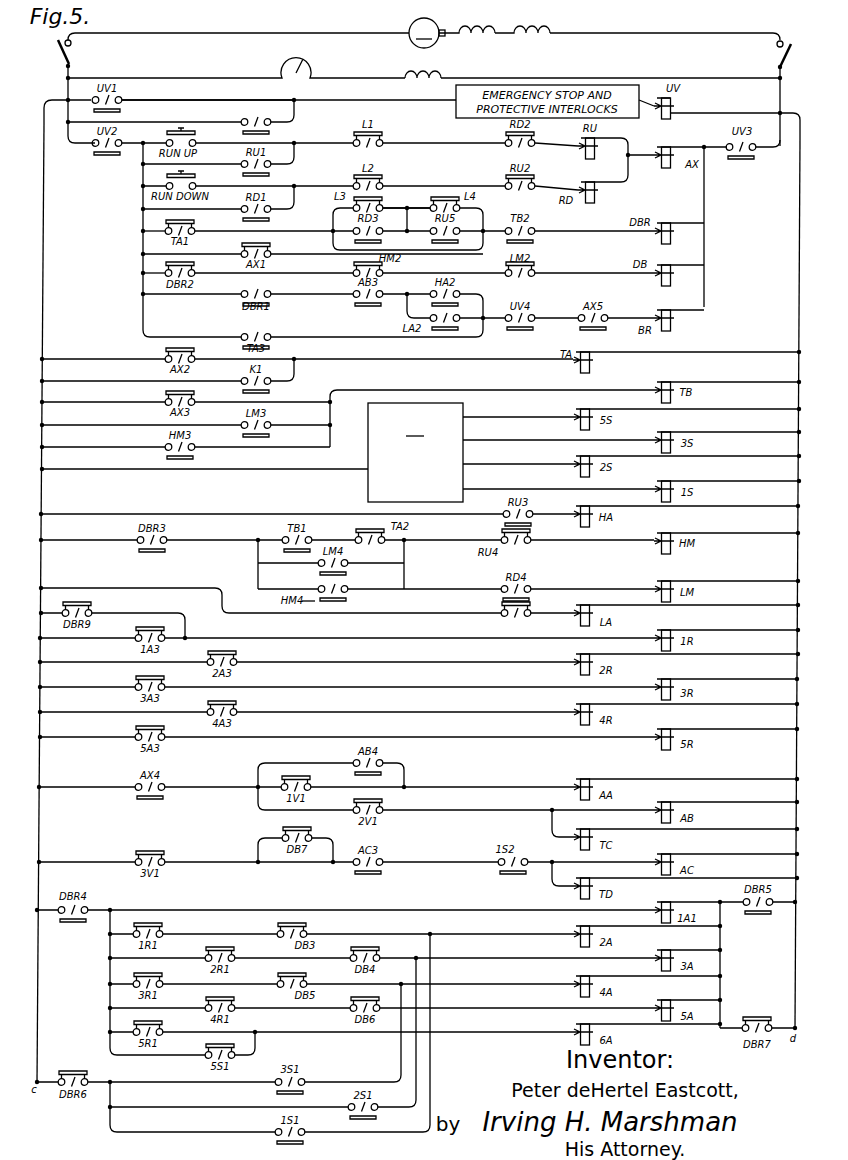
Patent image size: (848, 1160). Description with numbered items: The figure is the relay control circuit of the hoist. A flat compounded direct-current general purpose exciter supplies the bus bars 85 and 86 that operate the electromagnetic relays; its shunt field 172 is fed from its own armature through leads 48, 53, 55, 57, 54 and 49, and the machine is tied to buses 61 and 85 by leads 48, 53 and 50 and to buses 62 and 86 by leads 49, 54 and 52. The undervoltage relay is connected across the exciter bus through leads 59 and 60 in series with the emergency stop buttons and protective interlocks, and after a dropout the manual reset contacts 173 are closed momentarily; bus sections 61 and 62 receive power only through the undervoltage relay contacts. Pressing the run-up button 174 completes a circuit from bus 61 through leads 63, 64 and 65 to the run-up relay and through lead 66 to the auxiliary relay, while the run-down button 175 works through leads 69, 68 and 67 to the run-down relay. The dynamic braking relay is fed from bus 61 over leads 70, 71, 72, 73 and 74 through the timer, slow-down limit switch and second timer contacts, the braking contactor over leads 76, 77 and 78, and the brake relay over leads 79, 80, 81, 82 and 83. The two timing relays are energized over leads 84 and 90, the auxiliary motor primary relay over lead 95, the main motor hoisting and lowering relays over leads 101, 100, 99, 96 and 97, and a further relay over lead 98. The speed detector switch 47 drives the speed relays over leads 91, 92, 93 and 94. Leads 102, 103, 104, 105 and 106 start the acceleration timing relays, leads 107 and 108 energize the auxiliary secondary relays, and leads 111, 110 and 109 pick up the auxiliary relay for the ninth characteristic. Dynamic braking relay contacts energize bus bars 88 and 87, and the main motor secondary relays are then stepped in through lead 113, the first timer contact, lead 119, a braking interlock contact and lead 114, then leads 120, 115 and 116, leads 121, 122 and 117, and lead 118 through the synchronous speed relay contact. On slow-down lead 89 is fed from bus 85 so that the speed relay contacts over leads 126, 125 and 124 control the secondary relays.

The speed detector switch 47 is at (415, 452).
The lead 48 is at (252, 33).
The lead 49 is at (657, 33).
The lead 50 is at (53, 100).
The lead 52 is at (795, 113).
The lead 53 is at (75, 67).
The lead 54 is at (776, 67).
The lead 55 is at (228, 78).
The lead 57 is at (626, 78).
The lead 59 is at (254, 100).
The lead 60 is at (708, 113).
The exciter bus section 61 is at (76, 149).
The exciter bus section 62 is at (764, 153).
The lead 63 is at (333, 143).
The lead 64 is at (455, 143).
The lead 65 is at (562, 143).
The lead 66 is at (633, 156).
The lead 67 is at (564, 186).
The lead 68 is at (455, 186).
The lead 69 is at (329, 186).
The lead 70 is at (313, 231).
The lead 71 is at (398, 208).
The lead 72 is at (412, 235).
The lead 73 is at (462, 251).
The lead 74 is at (568, 231).
The lead 76 is at (322, 273).
The lead 77 is at (440, 273).
The lead 78 is at (568, 273).
The lead 79 is at (322, 294).
The lead 80 is at (394, 294).
The lead 81 is at (476, 294).
The lead 82 is at (562, 318).
The lead 83 is at (631, 318).
The lead 84 is at (322, 359).
The bus bar 85 is at (45, 319).
The bus bar 86 is at (799, 319).
The bus bar 87 is at (721, 967).
The bus bar 88 is at (110, 974).
The lead 89 is at (110, 1122).
The lead 90 is at (360, 390).
The lead 91 is at (535, 417).
The lead 92 is at (535, 440).
The lead 93 is at (535, 464).
The lead 94 is at (535, 489).
The lead 95 is at (558, 514).
The lead 96 is at (560, 540).
The lead 97 is at (562, 589).
The lead 98 is at (562, 613).
The lead 99 is at (405, 553).
The lead 100 is at (337, 540).
The lead 101 is at (228, 540).
The lead 102 is at (464, 638).
The lead 103 is at (464, 662).
The lead 104 is at (464, 687).
The lead 105 is at (464, 712).
The lead 106 is at (464, 737).
The lead 107 is at (464, 787).
The lead 108 is at (464, 810).
The lead 109 is at (546, 862).
The lead 110 is at (464, 862).
The lead 111 is at (226, 862).
The lead 113 is at (464, 910).
The lead 114 is at (464, 934).
The lead 115 is at (464, 958).
The lead 116 is at (464, 984).
The lead 117 is at (464, 1008).
The lead 118 is at (464, 1032).
The lead 119 is at (228, 934).
The lead 120 is at (262, 958).
The lead 121 is at (261, 984).
The lead 122 is at (262, 1008).
The lead 124 is at (367, 1082).
The lead 125 is at (402, 1108).
The lead 126 is at (398, 1132).
The shunt field 172 is at (418, 74).
The manual reset contacts 173 is at (181, 117).
The run-up button 174 is at (196, 133).
The run-down button 175 is at (196, 176).